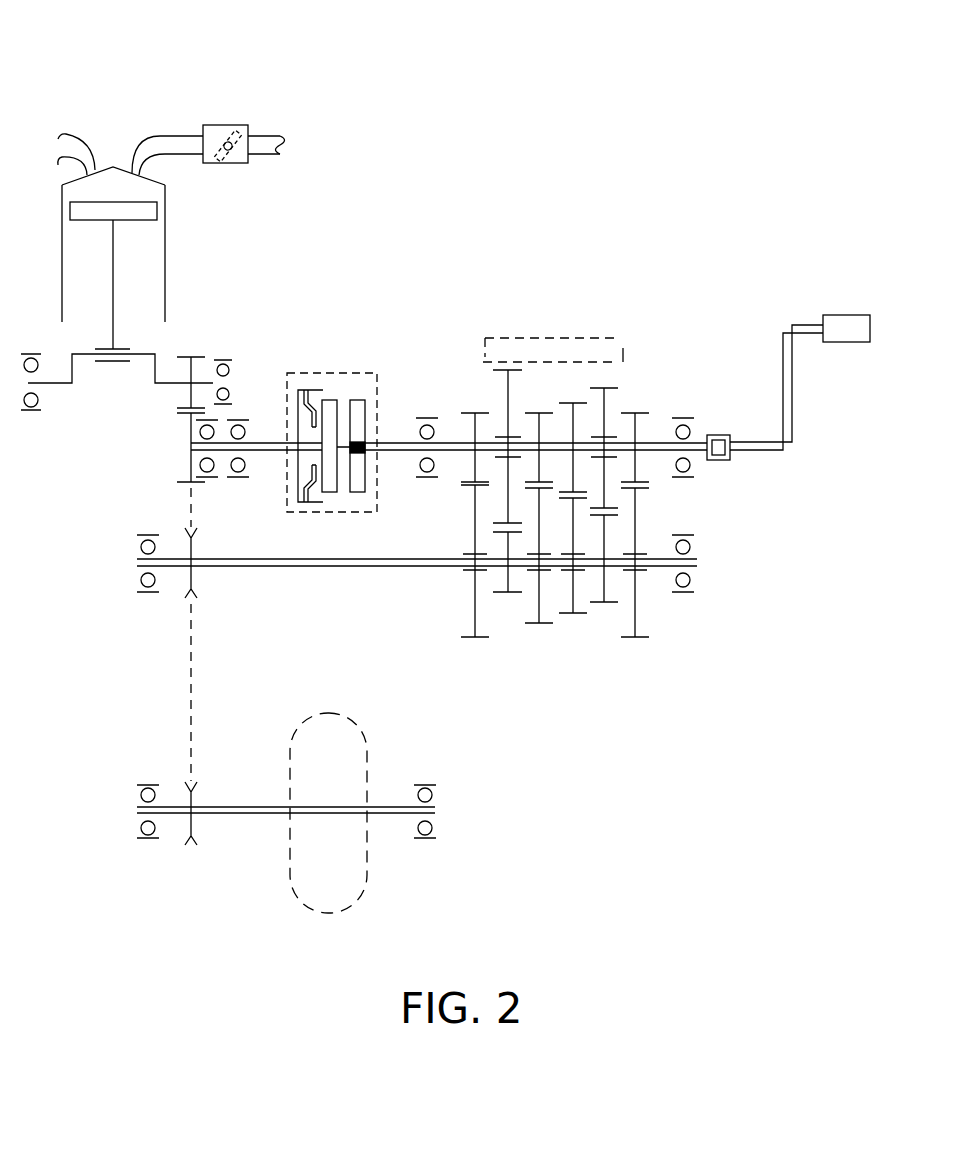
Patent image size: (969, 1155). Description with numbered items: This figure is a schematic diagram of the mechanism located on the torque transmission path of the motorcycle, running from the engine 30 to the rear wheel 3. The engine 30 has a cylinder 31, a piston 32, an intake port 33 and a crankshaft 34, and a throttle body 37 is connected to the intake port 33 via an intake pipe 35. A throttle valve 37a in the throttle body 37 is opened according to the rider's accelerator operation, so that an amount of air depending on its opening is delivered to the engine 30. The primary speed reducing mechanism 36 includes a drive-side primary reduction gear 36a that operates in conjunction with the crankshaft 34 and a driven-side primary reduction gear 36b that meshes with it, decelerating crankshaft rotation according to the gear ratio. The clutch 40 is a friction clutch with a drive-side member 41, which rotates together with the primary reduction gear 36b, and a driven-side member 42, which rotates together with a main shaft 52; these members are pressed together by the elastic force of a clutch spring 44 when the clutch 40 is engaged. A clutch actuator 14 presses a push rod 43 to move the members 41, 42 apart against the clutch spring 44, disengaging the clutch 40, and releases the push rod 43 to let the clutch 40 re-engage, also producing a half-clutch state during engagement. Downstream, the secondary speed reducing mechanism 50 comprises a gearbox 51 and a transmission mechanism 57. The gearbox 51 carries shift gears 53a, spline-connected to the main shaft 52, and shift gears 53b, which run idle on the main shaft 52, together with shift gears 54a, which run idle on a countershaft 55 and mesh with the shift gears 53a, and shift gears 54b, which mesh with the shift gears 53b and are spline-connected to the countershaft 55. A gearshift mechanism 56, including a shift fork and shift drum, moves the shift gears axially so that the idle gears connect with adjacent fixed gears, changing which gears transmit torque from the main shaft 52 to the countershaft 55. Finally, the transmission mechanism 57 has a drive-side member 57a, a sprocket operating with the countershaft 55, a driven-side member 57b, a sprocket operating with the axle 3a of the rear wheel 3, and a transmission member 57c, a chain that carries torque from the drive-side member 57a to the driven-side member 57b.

The rear wheel 3 is at (322, 712).
The axle 3a is at (377, 807).
The clutch actuator 14 is at (853, 315).
The engine 30 is at (124, 49).
The cylinder 31 is at (165, 257).
The piston 32 is at (153, 210).
The intake port 33 is at (153, 134).
The crankshaft 34 is at (62, 375).
The intake pipe 35 is at (180, 134).
The primary speed reducing mechanism 36 is at (98, 403).
The drive-side primary reduction gear 36a is at (185, 352).
The driven-side primary reduction gear 36b is at (188, 428).
The throttle body 37 is at (245, 125).
The throttle valve 37a is at (218, 162).
The clutch 40 is at (377, 336).
The drive-side member 41 is at (328, 400).
The driven-side member 42 is at (356, 400).
The push rod 43 is at (698, 452).
The clutch spring 44 is at (298, 402).
The secondary speed reducing mechanism 50 is at (92, 663).
The gearbox 51 is at (426, 596).
The main shaft 52 is at (660, 440).
The shift gears 53a is at (483, 413).
The shift gears 53b is at (512, 368).
The shift gears 54a is at (482, 640).
The shift gears 54b is at (512, 595).
The countershaft 55 is at (657, 570).
The gearshift mechanism 56 is at (633, 352).
The transmission mechanism 57 is at (170, 590).
The drive-side member 57a is at (188, 552).
The driven-side member 57b is at (188, 823).
The transmission member 57c is at (187, 720).